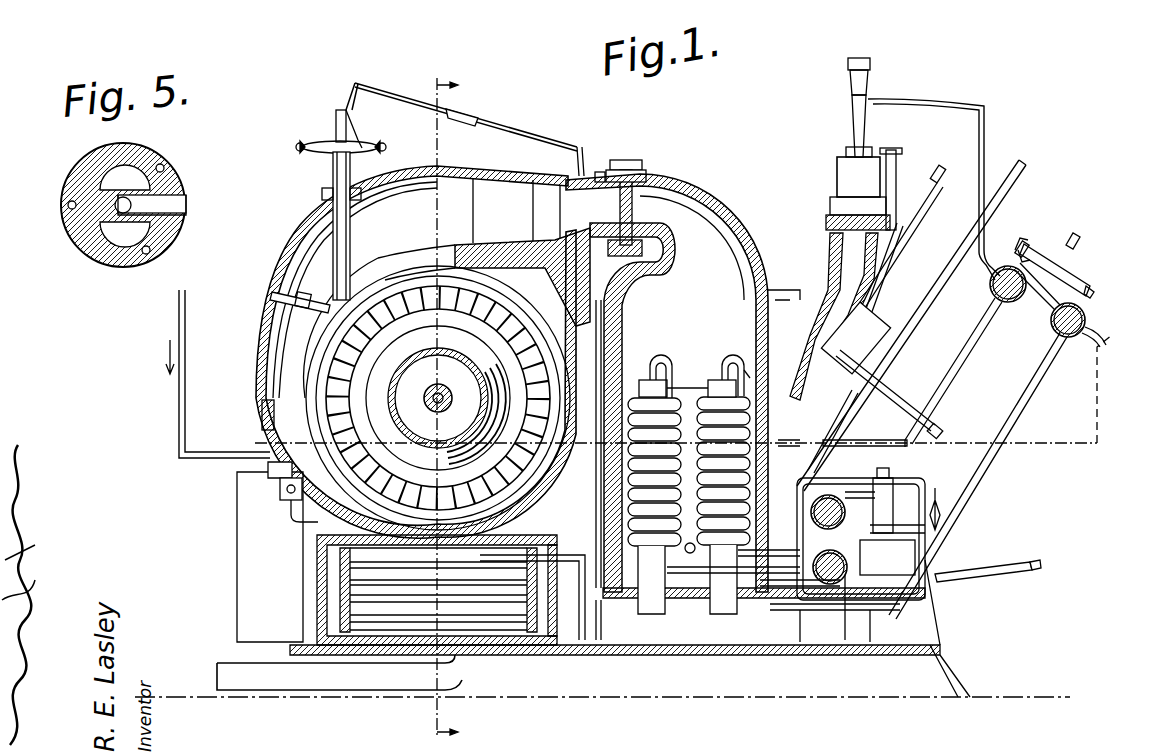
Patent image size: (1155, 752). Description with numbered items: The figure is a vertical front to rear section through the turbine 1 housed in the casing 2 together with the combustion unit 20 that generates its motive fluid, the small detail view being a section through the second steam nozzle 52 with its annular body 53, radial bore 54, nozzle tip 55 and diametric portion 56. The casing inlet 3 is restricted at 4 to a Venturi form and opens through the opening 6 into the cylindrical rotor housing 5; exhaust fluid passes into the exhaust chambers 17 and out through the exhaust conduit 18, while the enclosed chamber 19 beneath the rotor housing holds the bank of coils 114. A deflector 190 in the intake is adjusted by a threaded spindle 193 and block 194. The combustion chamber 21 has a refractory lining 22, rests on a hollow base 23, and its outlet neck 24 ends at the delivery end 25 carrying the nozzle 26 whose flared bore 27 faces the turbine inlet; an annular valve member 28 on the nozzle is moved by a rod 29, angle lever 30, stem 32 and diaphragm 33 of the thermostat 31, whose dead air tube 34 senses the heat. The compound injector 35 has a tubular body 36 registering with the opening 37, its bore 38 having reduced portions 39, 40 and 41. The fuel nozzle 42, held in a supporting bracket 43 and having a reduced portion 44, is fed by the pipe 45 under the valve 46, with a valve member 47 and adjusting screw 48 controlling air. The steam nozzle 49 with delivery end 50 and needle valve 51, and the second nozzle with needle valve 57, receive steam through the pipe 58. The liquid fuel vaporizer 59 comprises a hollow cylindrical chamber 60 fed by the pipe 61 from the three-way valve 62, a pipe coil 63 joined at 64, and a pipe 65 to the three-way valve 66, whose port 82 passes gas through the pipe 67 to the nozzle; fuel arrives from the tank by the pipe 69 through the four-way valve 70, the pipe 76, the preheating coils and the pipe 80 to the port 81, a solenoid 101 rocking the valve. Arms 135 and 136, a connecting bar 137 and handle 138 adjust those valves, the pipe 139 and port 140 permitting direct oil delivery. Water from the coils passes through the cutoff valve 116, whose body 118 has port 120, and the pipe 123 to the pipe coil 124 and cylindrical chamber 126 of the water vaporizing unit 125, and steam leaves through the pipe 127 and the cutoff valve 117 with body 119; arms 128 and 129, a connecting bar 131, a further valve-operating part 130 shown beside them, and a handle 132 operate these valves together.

In FIG. 1, the turbine 1 is at (470, 175).
In FIG. 1, the casing 2 is at (300, 235).
In FIG. 1, the inlet 3 is at (503, 176).
In FIG. 1, the restricted portion 4 is at (545, 170).
In FIG. 1, the rotor housing 5 is at (498, 243).
In FIG. 1, the opening 6 is at (256, 262).
In FIG. 1, the exhaust chambers 17 is at (438, 398).
In FIG. 1, the exhaust conduit 18 is at (380, 678).
In FIG. 1, the chamber 19 is at (575, 490).
In FIG. 1, the combustion unit 20 is at (740, 248).
In FIG. 1, the combustion chamber 21 is at (787, 297).
In FIG. 1, the refractory lining 22 is at (768, 285).
In FIG. 1, the hollow base 23 is at (598, 642).
In FIG. 1, the outlet neck 24 is at (690, 225).
In FIG. 1, the delivery end 25 is at (648, 176).
In FIG. 1, the nozzle 26 is at (628, 160).
In FIG. 1, the flared bore 27 is at (602, 172).
In FIG. 1, the annular valve member 28 is at (583, 147).
In FIG. 1, the rod 29 is at (490, 122).
In FIG. 1, the angle lever 30 is at (360, 84).
In FIG. 1, the thermostat 31 is at (360, 140).
In FIG. 1, the stem 32 is at (334, 120).
In FIG. 1, the diaphragm 33 is at (315, 142).
In FIG. 1, the dead air tube 34 is at (325, 198).
In FIG. 1, the compound injector 35 is at (883, 357).
In FIG. 1, the tubular body 36 is at (840, 420).
In FIG. 1, the opening 37 is at (785, 435).
In FIG. 1, the bore 38 is at (845, 447).
In FIG. 1, the double conical reduced portion 39 is at (920, 205).
In FIG. 1, the double conical reduced portion 40 is at (881, 289).
In FIG. 1, the double conical reduced portion 41 is at (744, 375).
In FIG. 1, the fuel nozzle 42 is at (872, 150).
In FIG. 1, the supporting bracket 43 is at (850, 175).
In FIG. 1, the double conical reduced portion 44 is at (882, 210).
In FIG. 1, the pipe 45 is at (914, 108).
In FIG. 1, the valve 46 is at (864, 70).
In FIG. 1, the valve member 47 is at (826, 222).
In FIG. 1, the adjusting screw 48 is at (896, 165).
In FIG. 1, the steam nozzle 49 is at (890, 255).
In FIG. 1, the delivery end 50 is at (862, 338).
In FIG. 1, the needle valve 51 is at (947, 178).
In FIG. 5, the second steam nozzle 52 is at (160, 193).
In FIG. 1, the second steam nozzle 52 is at (895, 370).
In FIG. 5, the annular body 53 is at (88, 168).
In FIG. 1, the annular body 53 is at (830, 345).
In FIG. 5, the radial bore 54 is at (135, 197).
In FIG. 1, the radial bore 54 is at (812, 339).
In FIG. 5, the nozzle tip 55 is at (123, 212).
In FIG. 1, the nozzle tip 55 is at (812, 392).
In FIG. 1, the diametric portion 56 is at (820, 330).
In FIG. 1, the needle valve 57 is at (938, 425).
In FIG. 1, the pipe 58 is at (905, 395).
In FIG. 1, the liquid fuel vaporizer 59 is at (720, 382).
In FIG. 1, the hollow cylindrical chamber 60 is at (760, 620).
In FIG. 1, the pipe 61 is at (1032, 388).
In FIG. 1, the three-way valve 62 is at (1085, 318).
In FIG. 1, the pipe coil 63 is at (687, 377).
In FIG. 1, the connection 64 is at (740, 362).
In FIG. 1, the pipe 65 is at (912, 446).
In FIG. 1, the three-way valve 66 is at (1010, 302).
In FIG. 1, the pipe 67 is at (975, 243).
In FIG. 1, the pipe 69 is at (178, 415).
In FIG. 1, the four-way valve 70 is at (284, 502).
In FIG. 1, the pipe 76 is at (302, 515).
In FIG. 1, the pipe 80 is at (578, 488).
In FIG. 1, the port 81 is at (1072, 338).
In FIG. 1, the port 82 is at (990, 296).
In FIG. 1, the solenoid 101 is at (262, 412).
In FIG. 1, the bank of coils 114 is at (505, 650).
In FIG. 1, the cutoff valve 116 is at (868, 642).
In FIG. 1, the cutoff valve 117 is at (860, 484).
In FIG. 1, the valve body 118 is at (870, 620).
In FIG. 1, the valve body 119 is at (845, 560).
In FIG. 1, the port 120 is at (829, 583).
In FIG. 1, the pipe 123 is at (798, 642).
In FIG. 1, the pipe coil 124 is at (604, 525).
In FIG. 1, the water vaporizing unit 125 is at (655, 385).
In FIG. 1, the cylindrical chamber 126 is at (655, 615).
In FIG. 1, the pipe 127 is at (702, 615).
In FIG. 1, the arm 128 is at (920, 590).
In FIG. 1, the arm 129 is at (870, 500).
In FIG. 1, the valve handle 130 is at (934, 501).
In FIG. 1, the connecting bar 131 is at (887, 557).
In FIG. 1, the handle 132 is at (940, 528).
In FIG. 1, the arm 135 is at (1094, 291).
In FIG. 1, the arm 136 is at (1030, 245).
In FIG. 1, the connecting bar 137 is at (1082, 268).
In FIG. 1, the handle 138 is at (1076, 233).
In FIG. 1, the pipe 139 is at (1037, 286).
In FIG. 1, the port 140 is at (1055, 333).
In FIG. 1, the deflector 190 is at (262, 342).
In FIG. 1, the threaded spindle 193 is at (272, 296).
In FIG. 1, the block 194 is at (290, 298).